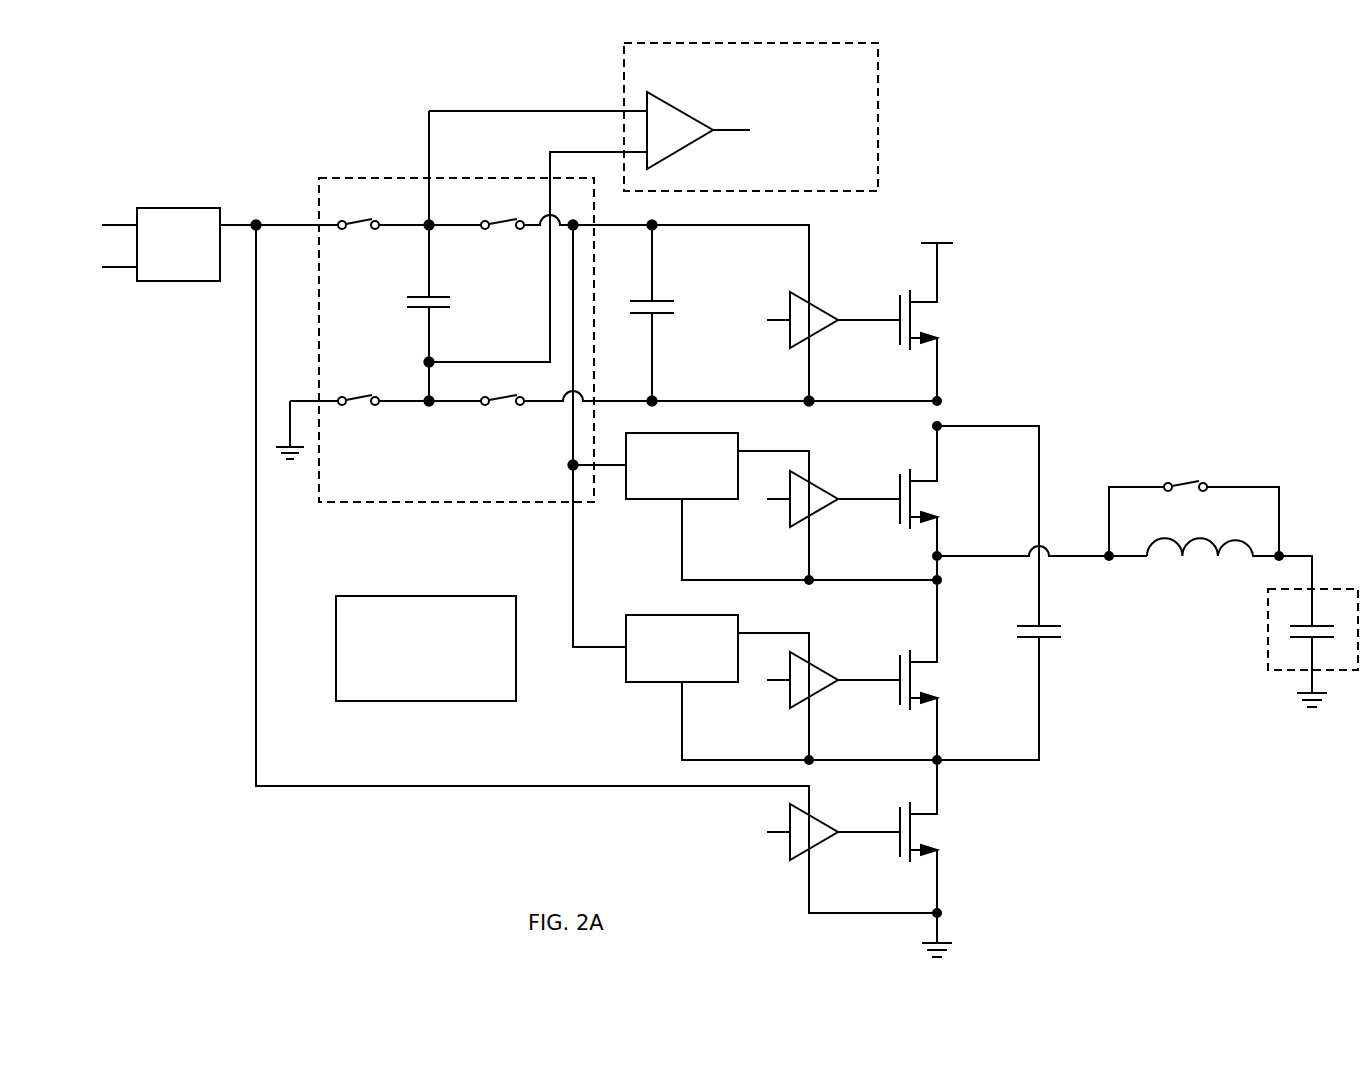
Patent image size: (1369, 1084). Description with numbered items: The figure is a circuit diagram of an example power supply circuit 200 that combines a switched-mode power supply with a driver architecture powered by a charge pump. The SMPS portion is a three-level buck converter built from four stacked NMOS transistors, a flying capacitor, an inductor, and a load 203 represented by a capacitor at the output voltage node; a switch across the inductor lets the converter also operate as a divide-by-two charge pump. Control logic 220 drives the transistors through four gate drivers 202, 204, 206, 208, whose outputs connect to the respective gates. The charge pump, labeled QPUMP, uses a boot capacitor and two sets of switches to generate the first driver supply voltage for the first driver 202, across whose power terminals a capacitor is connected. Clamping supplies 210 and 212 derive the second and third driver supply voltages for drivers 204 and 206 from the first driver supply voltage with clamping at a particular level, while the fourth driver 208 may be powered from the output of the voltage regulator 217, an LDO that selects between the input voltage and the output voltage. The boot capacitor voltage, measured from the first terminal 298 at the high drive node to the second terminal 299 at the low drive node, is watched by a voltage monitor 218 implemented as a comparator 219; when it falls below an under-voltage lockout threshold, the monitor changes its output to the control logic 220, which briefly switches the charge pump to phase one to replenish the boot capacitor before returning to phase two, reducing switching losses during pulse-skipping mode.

The power supply circuit 200 is at (702, 500).
The voltage regulator 217 is at (190, 208).
The voltage monitor 218 is at (878, 72).
The comparator 219 is at (689, 118).
The first terminal of capacitor Cboot 298 is at (429, 270).
The second terminal of capacitor Cboot 299 is at (429, 327).
The gate driver 202 is at (826, 336).
The gate driver 204 is at (826, 515).
The gate driver 206 is at (826, 696).
The gate driver 208 is at (826, 848).
The clamping supply 210 is at (738, 443).
The clamping supply 212 is at (738, 625).
The control logic 220 is at (483, 596).
The load 203 is at (1268, 652).